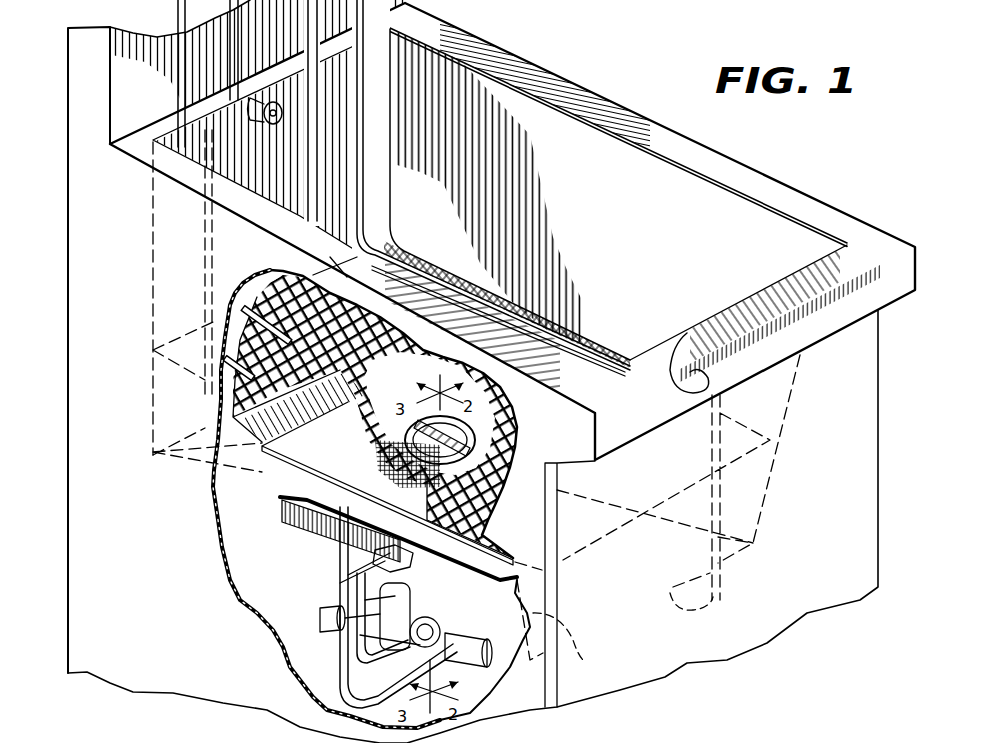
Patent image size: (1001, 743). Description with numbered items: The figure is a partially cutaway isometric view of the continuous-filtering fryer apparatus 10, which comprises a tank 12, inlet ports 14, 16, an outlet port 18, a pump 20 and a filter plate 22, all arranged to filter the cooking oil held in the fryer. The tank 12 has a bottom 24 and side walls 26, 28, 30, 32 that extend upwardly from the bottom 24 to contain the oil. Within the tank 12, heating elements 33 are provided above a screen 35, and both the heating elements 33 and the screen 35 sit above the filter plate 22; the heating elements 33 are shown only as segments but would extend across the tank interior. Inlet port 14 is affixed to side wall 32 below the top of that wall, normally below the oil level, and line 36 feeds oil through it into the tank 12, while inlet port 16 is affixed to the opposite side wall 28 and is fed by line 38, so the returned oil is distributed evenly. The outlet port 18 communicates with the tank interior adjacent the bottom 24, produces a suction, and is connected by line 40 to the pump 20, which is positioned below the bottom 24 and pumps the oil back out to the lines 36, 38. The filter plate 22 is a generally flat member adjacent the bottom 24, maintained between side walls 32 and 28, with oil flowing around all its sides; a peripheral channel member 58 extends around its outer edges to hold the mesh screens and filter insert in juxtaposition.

The continuous-filtering fryer apparatus 10 is at (753, 168).
The tank 12 is at (800, 242).
The inlet port 14 is at (687, 333).
The inlet port 16 is at (278, 98).
The outlet port 18 is at (503, 548).
The pump 20 is at (398, 590).
The filter plate 22 is at (215, 500).
The bottom 24 is at (297, 505).
The side wall 26 is at (545, 120).
The side wall 28 is at (190, 303).
The side wall 30 is at (584, 660).
The side wall 32 is at (777, 413).
The heating elements 33 is at (262, 278).
The screen 35 is at (227, 385).
The line 36 is at (205, 245).
The line 38 is at (716, 598).
The line 40 is at (307, 680).
The peripheral channel member 58 is at (298, 520).